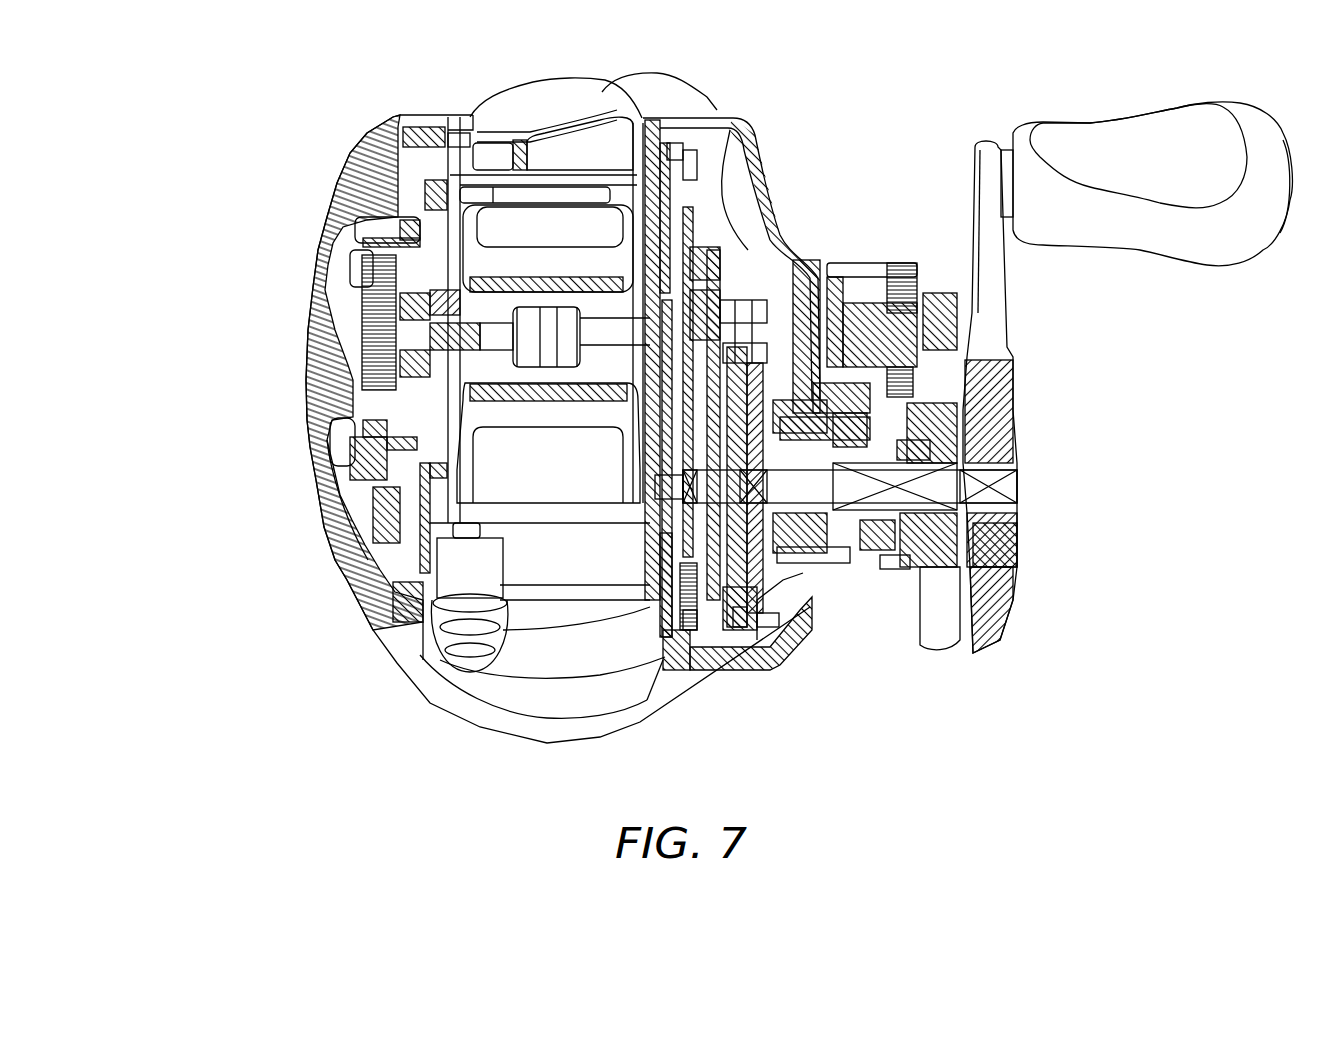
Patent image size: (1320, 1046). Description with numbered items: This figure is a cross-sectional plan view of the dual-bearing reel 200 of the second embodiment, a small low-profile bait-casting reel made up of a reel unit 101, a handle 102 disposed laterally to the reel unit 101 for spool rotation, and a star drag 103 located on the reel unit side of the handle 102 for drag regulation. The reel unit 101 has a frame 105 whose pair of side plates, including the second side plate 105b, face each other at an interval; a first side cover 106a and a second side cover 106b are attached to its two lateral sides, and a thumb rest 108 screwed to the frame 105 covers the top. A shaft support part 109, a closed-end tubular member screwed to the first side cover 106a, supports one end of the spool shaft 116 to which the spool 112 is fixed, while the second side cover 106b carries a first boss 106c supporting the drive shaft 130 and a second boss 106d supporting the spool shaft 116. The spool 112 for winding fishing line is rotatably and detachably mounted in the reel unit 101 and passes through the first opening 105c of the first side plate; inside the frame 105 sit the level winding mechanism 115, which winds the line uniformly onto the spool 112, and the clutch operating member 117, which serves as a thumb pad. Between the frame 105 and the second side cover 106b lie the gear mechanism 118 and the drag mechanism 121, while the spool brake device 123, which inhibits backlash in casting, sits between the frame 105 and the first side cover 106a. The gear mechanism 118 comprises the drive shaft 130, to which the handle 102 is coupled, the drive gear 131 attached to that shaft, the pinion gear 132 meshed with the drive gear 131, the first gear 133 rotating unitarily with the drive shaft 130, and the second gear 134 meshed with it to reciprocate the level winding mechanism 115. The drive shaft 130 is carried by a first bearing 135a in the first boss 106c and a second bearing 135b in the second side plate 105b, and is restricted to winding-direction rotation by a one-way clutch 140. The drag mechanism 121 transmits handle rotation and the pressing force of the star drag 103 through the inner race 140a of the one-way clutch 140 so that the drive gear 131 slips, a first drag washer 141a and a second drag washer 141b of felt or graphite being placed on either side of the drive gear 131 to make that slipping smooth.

The dual-bearing reel 200 is at (283, 170).
The reel unit 101 is at (710, 697).
The handle 102 is at (1007, 380).
The star drag 103 is at (946, 631).
The frame 105 is at (403, 627).
The second side plate 105b is at (683, 140).
The first opening 105c is at (360, 403).
The first side cover 106a is at (327, 522).
The second side cover 106b is at (786, 209).
The first boss 106c is at (883, 570).
The second boss 106d is at (827, 297).
The thumb rest 108 is at (437, 707).
The shaft support part 109 is at (343, 223).
The spool 112 is at (563, 413).
The level winding mechanism 115 is at (475, 688).
The spool shaft 116 is at (363, 283).
The clutch operating member 117 is at (645, 85).
The gear mechanism 118 is at (753, 329).
The drag mechanism 121 is at (776, 609).
The spool brake device 123 is at (350, 253).
The drive shaft 130 is at (958, 472).
The drive gear 131 is at (737, 343).
The pinion gear 132 is at (745, 325).
The first gear 133 is at (722, 667).
The second gear 134 is at (684, 670).
The first bearing 135a is at (893, 567).
The second bearing 135b is at (680, 665).
The one-way clutch 140 is at (860, 567).
The inner race 140a is at (1000, 545).
The first drag washer 141a is at (752, 650).
The second drag washer 141b is at (768, 675).